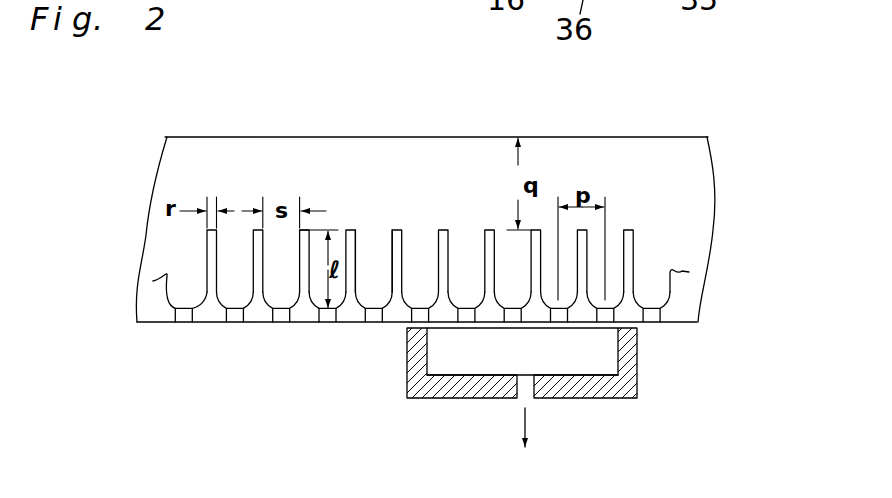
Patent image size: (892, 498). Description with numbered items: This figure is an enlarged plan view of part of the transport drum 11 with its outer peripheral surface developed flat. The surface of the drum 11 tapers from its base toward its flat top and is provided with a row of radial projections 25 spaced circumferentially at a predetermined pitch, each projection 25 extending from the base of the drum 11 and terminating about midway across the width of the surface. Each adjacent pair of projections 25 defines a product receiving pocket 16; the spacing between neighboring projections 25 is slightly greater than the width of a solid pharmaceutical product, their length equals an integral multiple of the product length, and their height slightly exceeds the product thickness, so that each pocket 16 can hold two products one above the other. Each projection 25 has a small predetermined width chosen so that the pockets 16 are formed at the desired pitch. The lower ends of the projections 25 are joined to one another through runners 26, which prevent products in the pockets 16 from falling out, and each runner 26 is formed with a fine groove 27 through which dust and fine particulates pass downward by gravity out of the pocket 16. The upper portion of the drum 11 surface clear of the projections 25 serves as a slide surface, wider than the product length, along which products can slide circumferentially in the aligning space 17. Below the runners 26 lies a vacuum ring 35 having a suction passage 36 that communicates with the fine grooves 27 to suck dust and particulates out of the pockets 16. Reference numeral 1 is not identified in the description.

The electrode pad 1 is at (325, 325).
The transport drum 11 is at (214, 137).
The product receiving pocket 16 is at (373, 283).
The aligning space 17 is at (257, 173).
The radial projection 25 is at (632, 233).
The runner 26 is at (312, 315).
The fine groove 27 is at (230, 313).
The vacuum ring 35 is at (472, 385).
The suction passage 36 is at (553, 353).